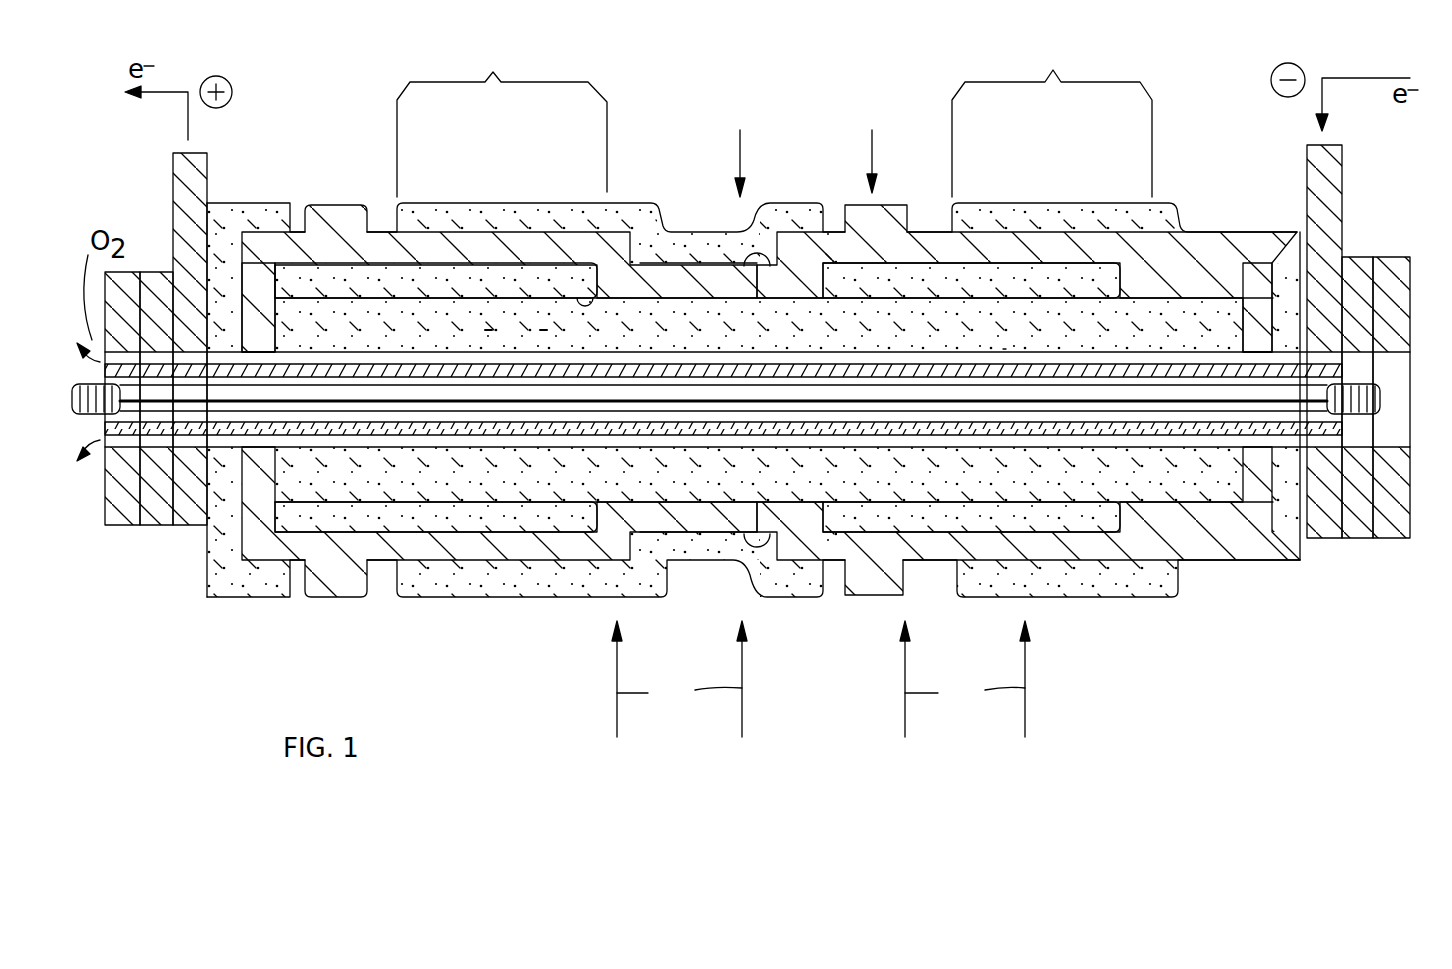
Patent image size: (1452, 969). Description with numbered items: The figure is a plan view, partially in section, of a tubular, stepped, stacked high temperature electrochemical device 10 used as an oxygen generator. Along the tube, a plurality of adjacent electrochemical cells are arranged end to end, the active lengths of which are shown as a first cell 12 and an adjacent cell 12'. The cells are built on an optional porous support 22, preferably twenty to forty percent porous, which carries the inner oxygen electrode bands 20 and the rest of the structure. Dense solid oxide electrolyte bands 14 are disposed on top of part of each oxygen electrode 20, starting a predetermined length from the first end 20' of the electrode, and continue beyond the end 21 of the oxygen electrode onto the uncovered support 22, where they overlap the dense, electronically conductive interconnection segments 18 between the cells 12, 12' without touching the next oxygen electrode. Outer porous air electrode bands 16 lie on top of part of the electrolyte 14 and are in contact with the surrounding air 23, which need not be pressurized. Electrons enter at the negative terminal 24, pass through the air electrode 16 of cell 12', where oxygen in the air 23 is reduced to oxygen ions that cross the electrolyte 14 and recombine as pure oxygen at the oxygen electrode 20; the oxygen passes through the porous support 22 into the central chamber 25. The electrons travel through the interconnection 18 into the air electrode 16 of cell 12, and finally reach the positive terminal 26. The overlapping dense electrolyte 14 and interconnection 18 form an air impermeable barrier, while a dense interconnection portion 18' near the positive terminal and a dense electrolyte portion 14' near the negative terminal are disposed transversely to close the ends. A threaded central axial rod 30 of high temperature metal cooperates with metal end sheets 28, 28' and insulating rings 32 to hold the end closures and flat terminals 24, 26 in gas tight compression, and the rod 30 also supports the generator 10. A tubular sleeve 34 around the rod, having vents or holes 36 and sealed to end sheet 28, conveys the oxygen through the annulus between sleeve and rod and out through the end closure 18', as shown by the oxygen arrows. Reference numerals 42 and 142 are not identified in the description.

The high temperature electrochemical device 10 is at (373, 618).
The first cell 12 is at (502, 117).
The adjacent cell 12' is at (1052, 116).
The solid oxide electrolyte band 14 is at (774, 397).
The dense electrolyte portion 14' is at (1231, 307).
The air electrode band 16 is at (236, 203).
The interconnection segment 18 is at (771, 372).
The dense inter-connection portion 18' is at (293, 307).
The oxygen electrode band 20 is at (697, 304).
The first end of oxygen electrode 20' is at (697, 409).
The end of the oxygen electrode 21 is at (578, 300).
The porous support 22 is at (516, 331).
The air 23 is at (872, 140).
The negative terminal 24 is at (1333, 186).
The central chamber 25 is at (1003, 352).
The positive terminal 26 is at (185, 195).
The metal end sheet 28 is at (122, 441).
The metal end sheet 28' is at (1403, 434).
The central axial rod 30 is at (660, 402).
The insulating ring 32 is at (157, 515).
The tubular sleeve 34 is at (1017, 430).
The vents or holes 36 is at (807, 428).
The upper seal layer 42 is at (622, 203).
The lower seal layer 142 is at (460, 597).